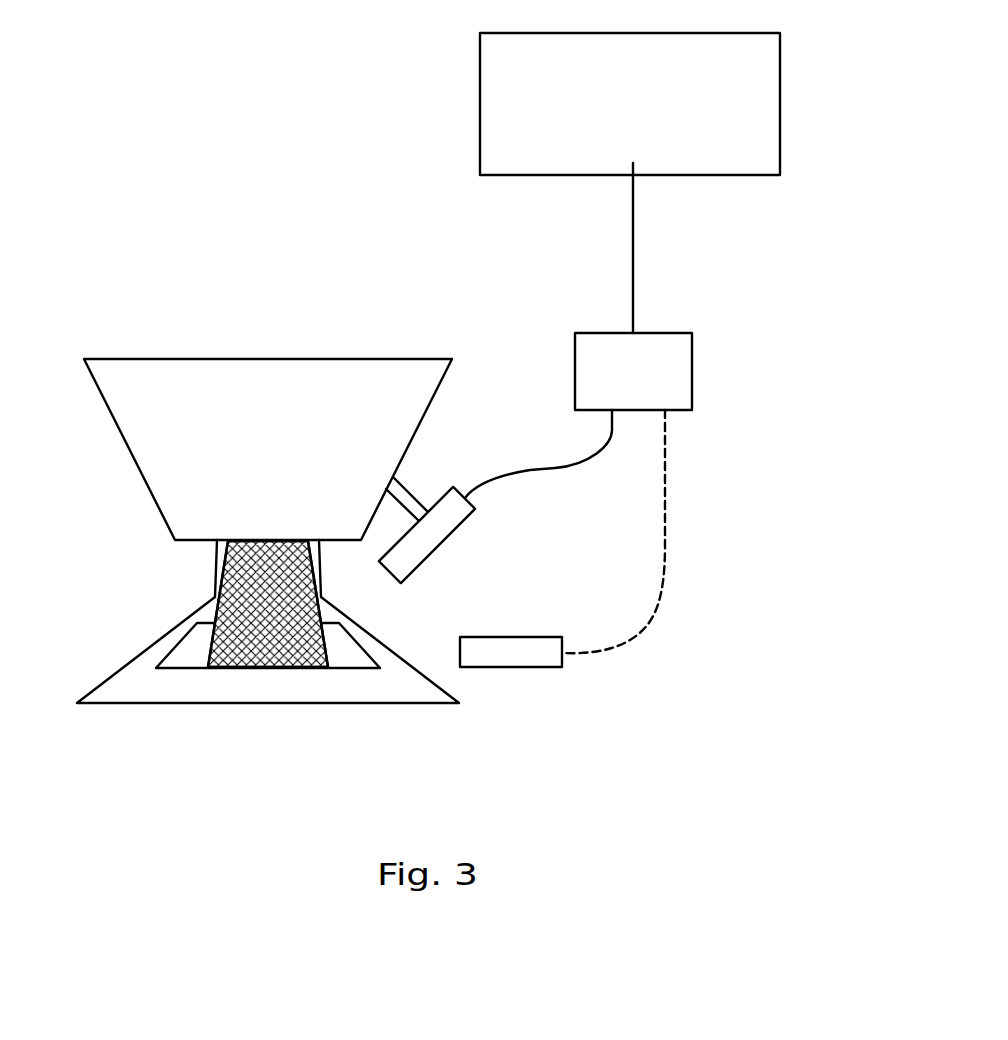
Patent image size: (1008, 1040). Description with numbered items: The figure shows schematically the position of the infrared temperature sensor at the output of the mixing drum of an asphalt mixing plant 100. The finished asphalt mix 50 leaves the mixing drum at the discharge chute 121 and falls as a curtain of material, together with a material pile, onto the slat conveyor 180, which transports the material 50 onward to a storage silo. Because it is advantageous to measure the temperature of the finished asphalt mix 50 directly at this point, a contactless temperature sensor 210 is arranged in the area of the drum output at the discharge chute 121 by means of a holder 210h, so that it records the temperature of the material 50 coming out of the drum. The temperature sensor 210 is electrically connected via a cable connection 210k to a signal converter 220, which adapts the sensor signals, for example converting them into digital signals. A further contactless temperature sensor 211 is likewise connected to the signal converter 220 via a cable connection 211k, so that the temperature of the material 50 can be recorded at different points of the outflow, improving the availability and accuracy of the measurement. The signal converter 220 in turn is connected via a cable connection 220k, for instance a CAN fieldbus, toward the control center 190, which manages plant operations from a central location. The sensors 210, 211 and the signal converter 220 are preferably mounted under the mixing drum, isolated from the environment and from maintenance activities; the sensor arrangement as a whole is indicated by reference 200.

The asphalt mixing plant 100 is at (199, 67).
The discharge chute 121 is at (292, 461).
The finished asphalt mix 50 is at (224, 567).
The slat conveyor 180 is at (107, 665).
The control center 190 is at (655, 116).
The monitoring system 200 is at (814, 212).
The temperature sensor 210 is at (430, 530).
The holder 210h is at (417, 488).
The cable connection 210k is at (550, 472).
The further contactless temperature sensor 211 is at (512, 648).
The cable connection 211k is at (653, 613).
The signal converter 220 is at (659, 388).
The cable connection 220k is at (633, 258).